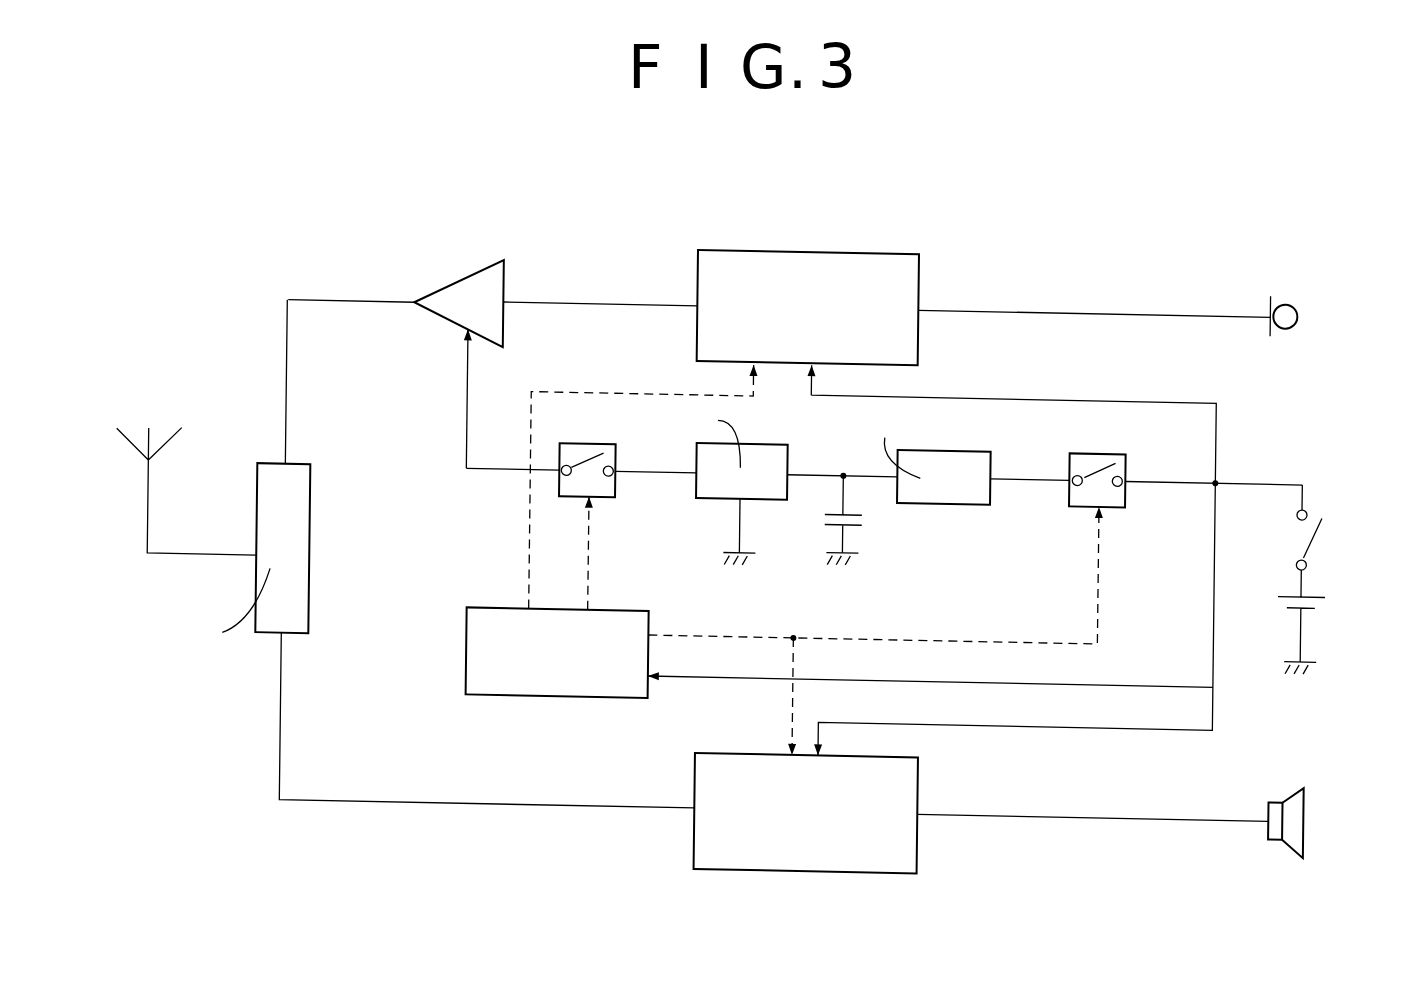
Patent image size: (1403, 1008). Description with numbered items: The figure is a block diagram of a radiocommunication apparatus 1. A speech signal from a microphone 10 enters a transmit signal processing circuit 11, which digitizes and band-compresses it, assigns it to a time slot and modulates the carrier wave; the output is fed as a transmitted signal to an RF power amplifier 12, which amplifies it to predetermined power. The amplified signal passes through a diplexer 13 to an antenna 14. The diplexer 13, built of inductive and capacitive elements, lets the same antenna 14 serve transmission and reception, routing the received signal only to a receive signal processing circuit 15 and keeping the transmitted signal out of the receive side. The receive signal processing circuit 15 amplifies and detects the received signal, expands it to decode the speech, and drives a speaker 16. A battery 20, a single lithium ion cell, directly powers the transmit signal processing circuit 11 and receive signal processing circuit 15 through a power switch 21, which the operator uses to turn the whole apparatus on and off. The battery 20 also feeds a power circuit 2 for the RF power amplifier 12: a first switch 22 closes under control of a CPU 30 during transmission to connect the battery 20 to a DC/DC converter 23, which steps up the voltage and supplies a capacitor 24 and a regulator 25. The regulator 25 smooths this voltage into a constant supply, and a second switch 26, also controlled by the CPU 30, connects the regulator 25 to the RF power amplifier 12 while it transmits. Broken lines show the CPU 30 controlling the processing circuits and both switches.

The radiocommunication apparatus 1 is at (897, 211).
The power circuit for RF power amplifier 2 is at (1239, 429).
The microphone 10 is at (1281, 293).
The transmit signal processing circuit 11 is at (809, 248).
The RF power amplifier 12 is at (447, 287).
The diplexer 13 is at (257, 487).
The antenna 14 is at (148, 506).
The receive signal processing circuit 15 is at (699, 853).
The speaker 16 is at (1309, 818).
The battery 20 is at (1321, 592).
The power switch 21 is at (1320, 526).
The first switch 22 is at (1118, 499).
The DC/DC converter 23 is at (968, 500).
The capacitor 24 is at (862, 514).
The regulator 25 is at (718, 500).
The second switch 26 is at (607, 499).
The CPU 30 is at (562, 701).